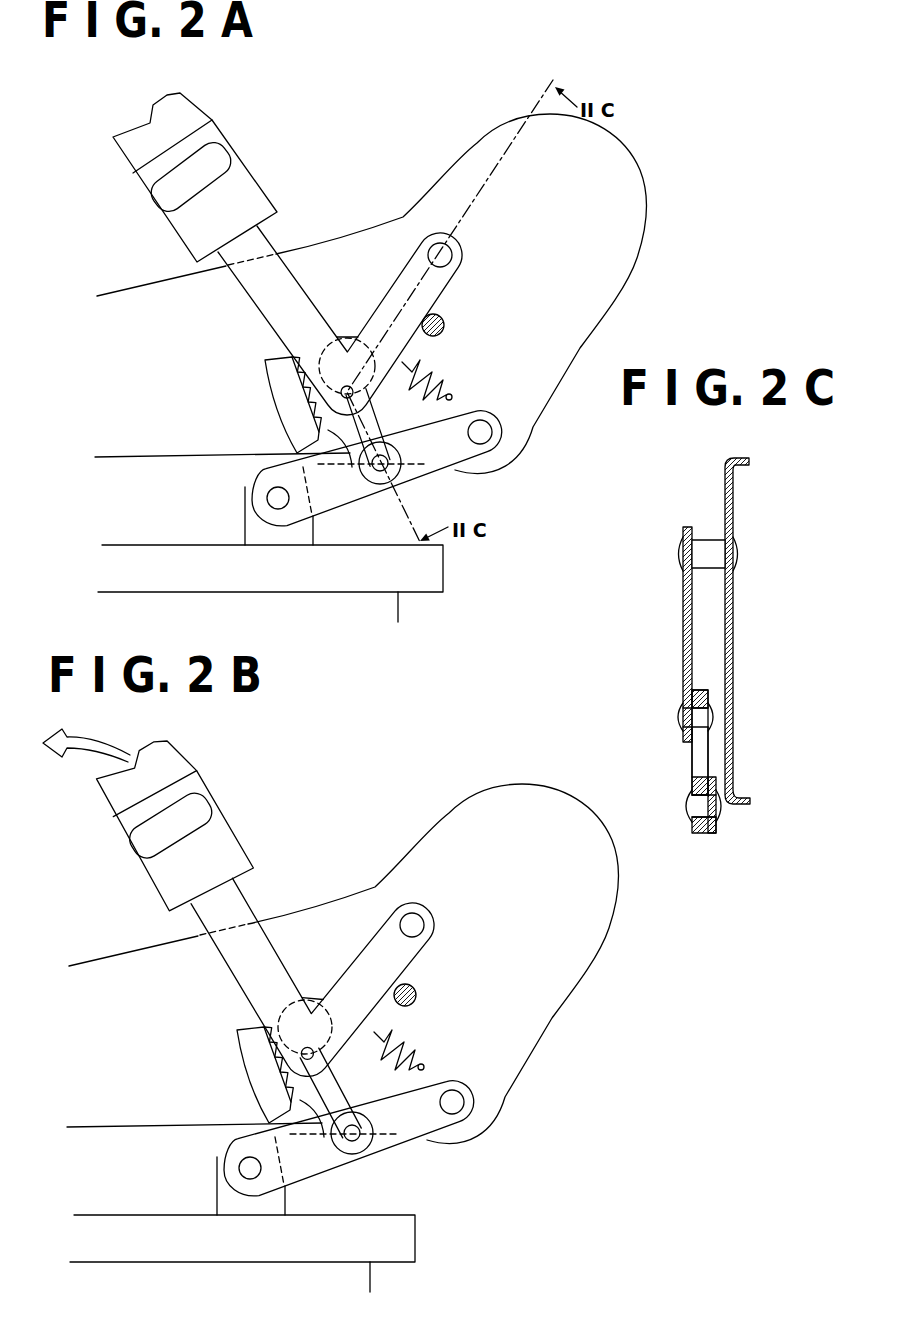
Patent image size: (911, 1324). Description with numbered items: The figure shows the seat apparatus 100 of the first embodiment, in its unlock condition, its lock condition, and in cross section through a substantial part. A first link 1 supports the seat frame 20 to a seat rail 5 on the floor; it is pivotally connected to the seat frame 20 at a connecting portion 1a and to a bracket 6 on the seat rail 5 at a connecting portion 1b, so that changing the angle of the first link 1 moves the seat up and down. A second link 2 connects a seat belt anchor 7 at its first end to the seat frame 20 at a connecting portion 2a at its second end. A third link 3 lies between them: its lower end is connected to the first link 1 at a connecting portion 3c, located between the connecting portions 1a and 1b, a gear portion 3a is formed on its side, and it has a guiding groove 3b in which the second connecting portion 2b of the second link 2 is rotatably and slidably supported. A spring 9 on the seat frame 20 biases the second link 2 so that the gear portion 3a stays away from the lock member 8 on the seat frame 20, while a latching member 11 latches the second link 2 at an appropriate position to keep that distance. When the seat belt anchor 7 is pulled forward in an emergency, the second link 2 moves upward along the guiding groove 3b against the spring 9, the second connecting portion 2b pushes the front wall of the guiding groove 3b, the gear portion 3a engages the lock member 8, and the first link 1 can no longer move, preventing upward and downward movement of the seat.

In FIG. 2A, the first link 1 is at (457, 452).
In FIG. 2B, the first link 1 is at (429, 1122).
In FIG. 2C, the first link 1 is at (716, 832).
In FIG. 2A, the connecting portion 1a is at (487, 432).
In FIG. 2B, the connecting portion 1a is at (459, 1102).
In FIG. 2A, the connecting portion 1b is at (272, 498).
In FIG. 2B, the connecting portion 1b is at (244, 1168).
In FIG. 2A, the second link 2 is at (260, 307).
In FIG. 2B, the second link 2 is at (237, 980).
In FIG. 2C, the second link 2 is at (688, 633).
In FIG. 2A, the connecting portion 2a is at (452, 237).
In FIG. 2B, the connecting portion 2a is at (424, 907).
In FIG. 2C, the connecting portion 2a is at (710, 547).
In FIG. 2A, the second connecting portion 2b is at (330, 340).
In FIG. 2B, the second connecting portion 2b is at (300, 1002).
In FIG. 2C, the second connecting portion 2b is at (682, 712).
In FIG. 2A, the third link 3 is at (410, 462).
In FIG. 2B, the third link 3 is at (382, 1132).
In FIG. 2C, the third link 3 is at (692, 783).
In FIG. 2A, the gear portion 3a is at (283, 420).
In FIG. 2B, the gear portion 3a is at (255, 1092).
In FIG. 2A, the guiding groove 3b is at (352, 467).
In FIG. 2B, the guiding groove 3b is at (324, 1137).
In FIG. 2C, the guiding groove 3b is at (697, 758).
In FIG. 2A, the connecting portion 3c is at (383, 477).
In FIG. 2B, the connecting portion 3c is at (355, 1147).
In FIG. 2C, the connecting portion 3c is at (685, 808).
In FIG. 2A, the seat rail 5 is at (143, 555).
In FIG. 2B, the seat rail 5 is at (115, 1225).
In FIG. 2A, the bracket 6 is at (282, 533).
In FIG. 2B, the bracket 6 is at (254, 1203).
In FIG. 2A, the seat belt anchor 7 is at (240, 153).
In FIG. 2B, the seat belt anchor 7 is at (225, 832).
In FIG. 2A, the lock member 8 is at (270, 378).
In FIG. 2B, the lock member 8 is at (242, 1048).
In FIG. 2A, the spring 9 is at (447, 368).
In FIG. 2B, the spring 9 is at (419, 1038).
In FIG. 2A, the latching member 11 is at (447, 320).
In FIG. 2B, the latching member 11 is at (419, 990).
In FIG. 2A, the seat frame 20 is at (405, 217).
In FIG. 2B, the seat frame 20 is at (377, 887).
In FIG. 2C, the seat frame 20 is at (735, 490).
In FIG. 2A, the seat apparatus 100 is at (522, 272).
In FIG. 2B, the seat apparatus 100 is at (494, 942).